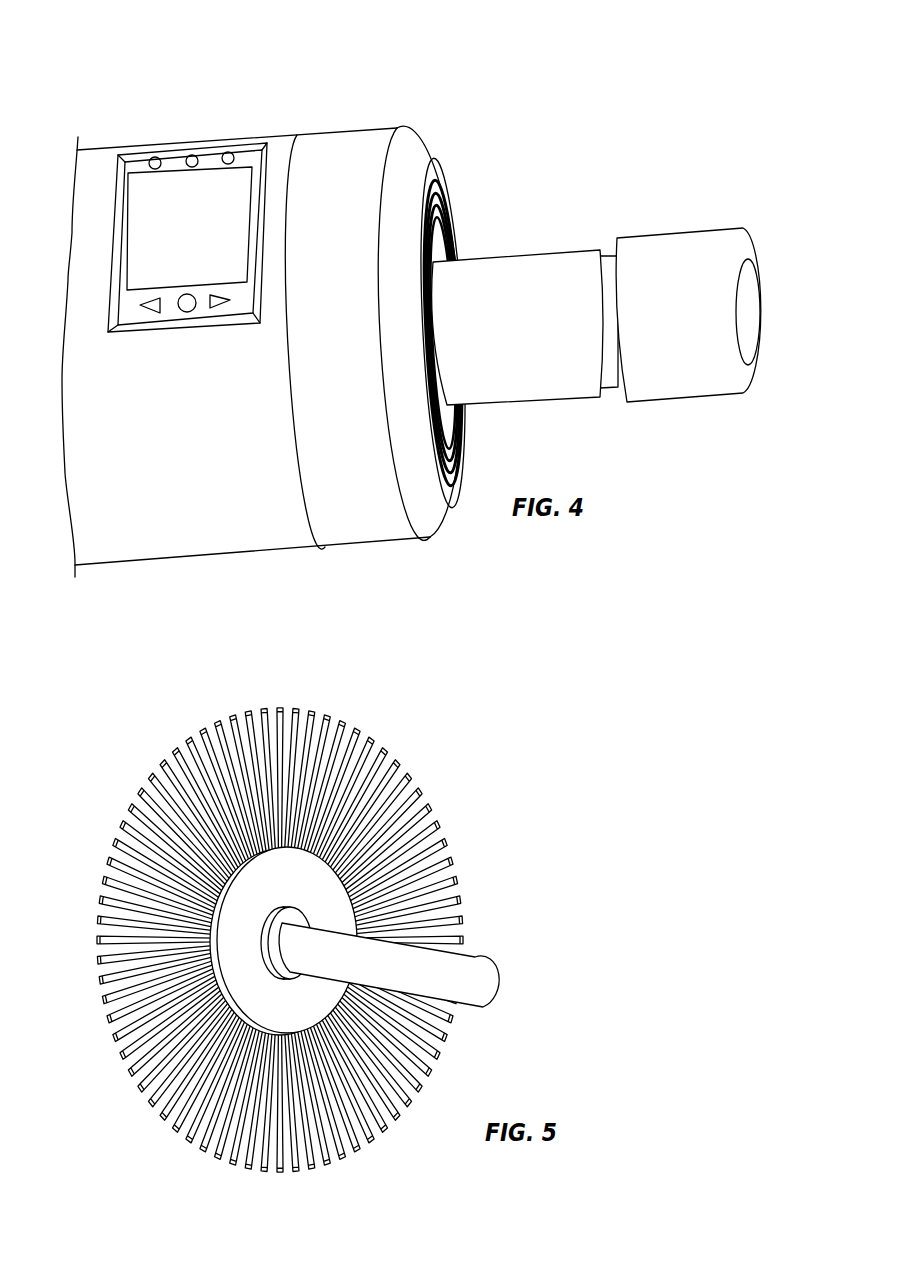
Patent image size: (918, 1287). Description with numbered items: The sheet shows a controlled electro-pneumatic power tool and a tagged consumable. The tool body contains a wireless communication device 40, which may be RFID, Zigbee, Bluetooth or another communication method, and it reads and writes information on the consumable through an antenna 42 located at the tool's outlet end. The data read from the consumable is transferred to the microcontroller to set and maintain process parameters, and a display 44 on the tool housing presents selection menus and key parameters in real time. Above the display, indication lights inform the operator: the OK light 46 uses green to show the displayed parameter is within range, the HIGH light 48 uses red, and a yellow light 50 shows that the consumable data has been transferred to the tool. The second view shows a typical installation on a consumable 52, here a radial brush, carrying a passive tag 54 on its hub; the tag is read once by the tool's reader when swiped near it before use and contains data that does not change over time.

In FIG. 4, the wireless communication device 40 is at (273, 200).
In FIG. 4, the antenna 42 is at (450, 210).
In FIG. 4, the display 44 is at (155, 210).
In FIG. 4, the OK indication light 46 is at (192, 148).
In FIG. 4, the HIGH indication light 48 is at (227, 147).
In FIG. 4, the yellow light 50 is at (155, 148).
In FIG. 5, the consumable 52 is at (418, 875).
In FIG. 5, the passive tag 54 is at (238, 972).